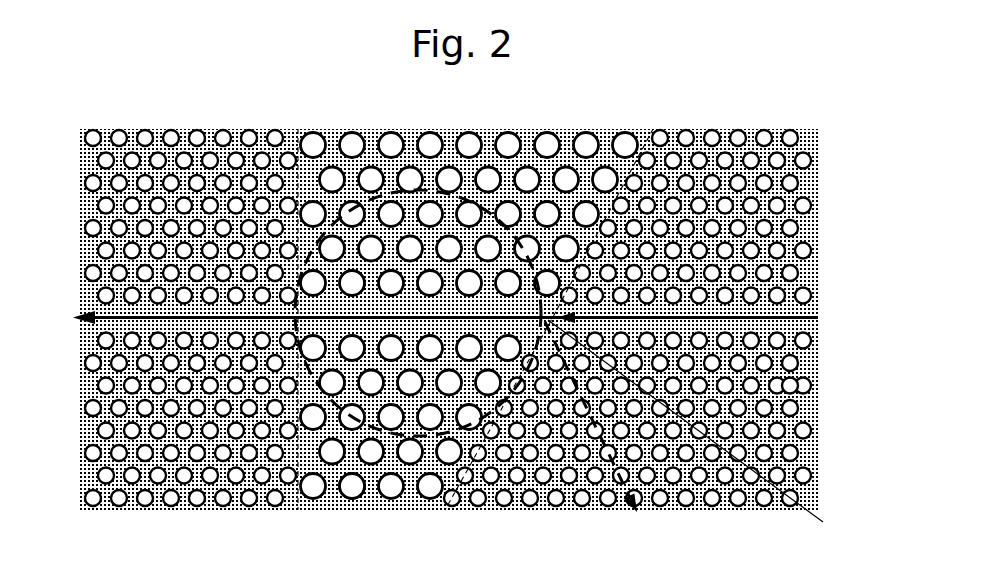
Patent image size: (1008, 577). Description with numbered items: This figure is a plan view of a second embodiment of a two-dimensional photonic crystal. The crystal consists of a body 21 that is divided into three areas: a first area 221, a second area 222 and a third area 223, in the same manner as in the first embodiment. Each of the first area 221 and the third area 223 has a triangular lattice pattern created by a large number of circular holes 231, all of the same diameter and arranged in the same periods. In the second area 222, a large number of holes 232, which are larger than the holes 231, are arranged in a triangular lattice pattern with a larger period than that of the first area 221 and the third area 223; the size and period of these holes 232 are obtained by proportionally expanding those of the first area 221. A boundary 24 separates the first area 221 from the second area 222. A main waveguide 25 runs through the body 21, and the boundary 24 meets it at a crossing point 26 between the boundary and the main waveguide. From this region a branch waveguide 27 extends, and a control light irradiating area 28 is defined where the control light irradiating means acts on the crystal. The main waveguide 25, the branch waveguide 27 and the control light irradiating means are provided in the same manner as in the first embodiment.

The body 21 is at (807, 180).
The first area 221 is at (639, 110).
The second area 222 is at (298, 104).
The third area 223 is at (312, 110).
The hole 231 is at (802, 387).
The hole 232 is at (355, 488).
The boundary between first area and second area 24 is at (460, 450).
The main waveguide 25 is at (110, 312).
The crossing point between boundary and main waveguide 26 is at (699, 430).
The branch waveguide 27 is at (640, 472).
The control light irradiating area 28 is at (338, 407).